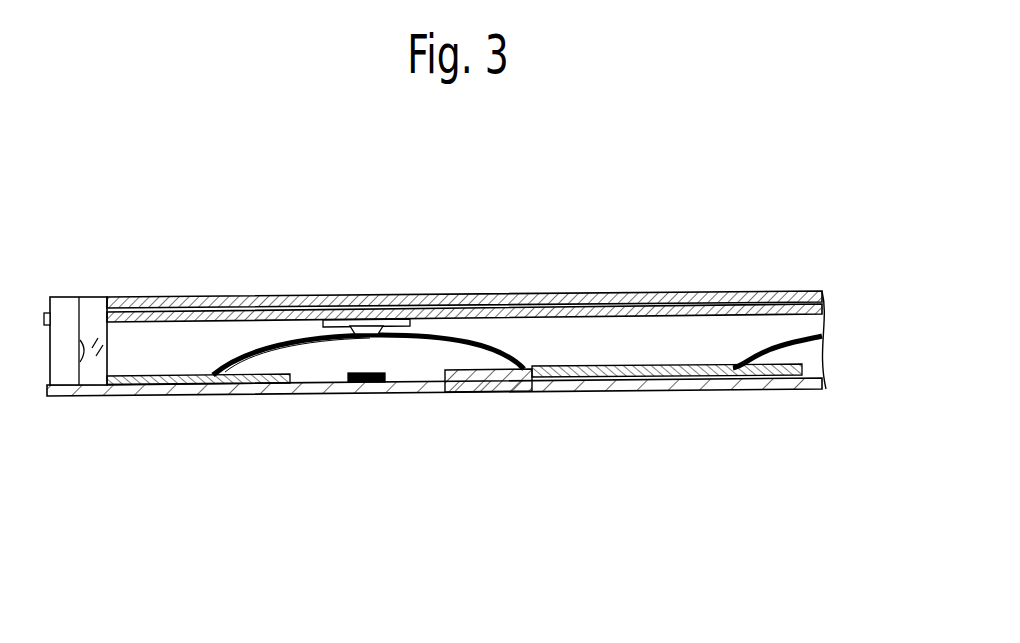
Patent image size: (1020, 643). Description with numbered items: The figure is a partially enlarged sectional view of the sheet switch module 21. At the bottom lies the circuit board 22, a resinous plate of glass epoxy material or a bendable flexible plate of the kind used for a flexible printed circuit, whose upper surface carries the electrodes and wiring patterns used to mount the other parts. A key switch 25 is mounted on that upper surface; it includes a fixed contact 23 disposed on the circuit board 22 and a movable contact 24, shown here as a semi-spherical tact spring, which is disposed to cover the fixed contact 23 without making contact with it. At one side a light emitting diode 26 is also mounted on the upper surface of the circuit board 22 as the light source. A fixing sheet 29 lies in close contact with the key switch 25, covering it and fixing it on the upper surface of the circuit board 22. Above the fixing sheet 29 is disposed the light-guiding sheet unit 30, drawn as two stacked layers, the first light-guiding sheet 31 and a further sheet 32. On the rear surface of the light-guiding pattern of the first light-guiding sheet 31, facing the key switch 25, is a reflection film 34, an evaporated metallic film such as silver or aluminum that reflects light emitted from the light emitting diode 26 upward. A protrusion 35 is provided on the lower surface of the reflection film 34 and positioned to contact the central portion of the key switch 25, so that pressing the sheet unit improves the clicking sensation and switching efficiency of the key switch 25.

The sheet switch module 21 is at (471, 302).
The circuit board 22 is at (62, 398).
The fixed contact 23 is at (366, 383).
The movable contact 24 is at (302, 346).
The key switch 25 is at (441, 328).
The light emitting diode 26 is at (68, 297).
The fixing sheet 29 is at (508, 355).
The light-guiding sheet unit 30 is at (502, 269).
The first light-guiding sheet 31 is at (822, 309).
The upper substrate of touch panel 32 is at (822, 294).
The reflection film 34 is at (330, 321).
The protrusion 35 is at (356, 327).